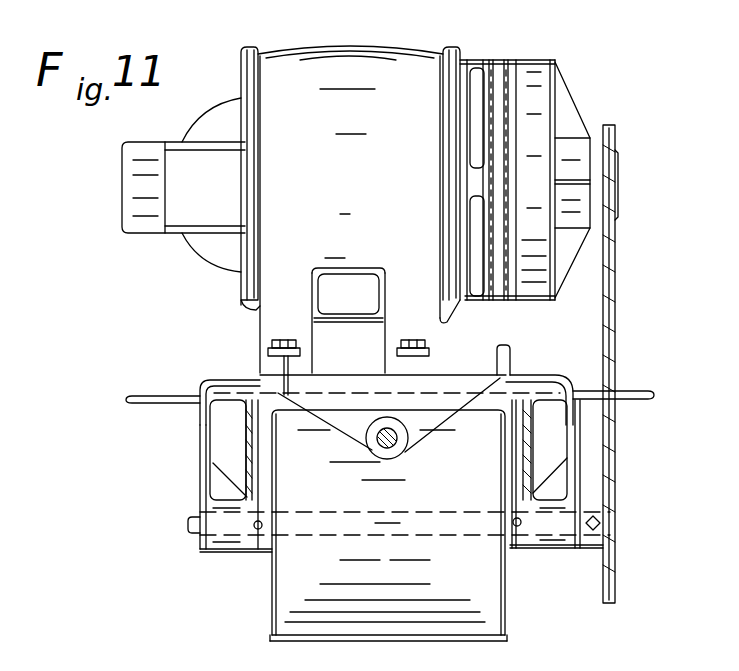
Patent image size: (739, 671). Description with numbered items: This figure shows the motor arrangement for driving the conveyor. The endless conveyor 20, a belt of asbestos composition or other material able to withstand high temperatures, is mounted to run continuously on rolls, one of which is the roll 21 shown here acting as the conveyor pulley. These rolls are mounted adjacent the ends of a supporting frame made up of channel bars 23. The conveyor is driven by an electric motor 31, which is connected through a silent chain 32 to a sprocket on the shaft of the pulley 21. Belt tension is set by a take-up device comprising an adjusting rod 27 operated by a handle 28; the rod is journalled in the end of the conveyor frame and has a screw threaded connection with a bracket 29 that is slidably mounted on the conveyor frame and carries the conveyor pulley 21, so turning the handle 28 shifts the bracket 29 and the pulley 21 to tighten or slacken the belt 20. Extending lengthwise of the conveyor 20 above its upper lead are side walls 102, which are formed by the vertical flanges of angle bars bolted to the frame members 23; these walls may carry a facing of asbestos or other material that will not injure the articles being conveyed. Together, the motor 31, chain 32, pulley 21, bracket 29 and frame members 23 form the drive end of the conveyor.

The electric motor 31 is at (422, 58).
The silent chain 32 is at (616, 296).
The bracket 29 is at (450, 380).
The side walls 102 is at (155, 396).
The channel bars 23 is at (245, 447).
The adjusting rod 27 is at (393, 447).
The roll 21 is at (270, 595).
The endless conveyor 20 is at (393, 631).
The handle 28 is at (52, 670).